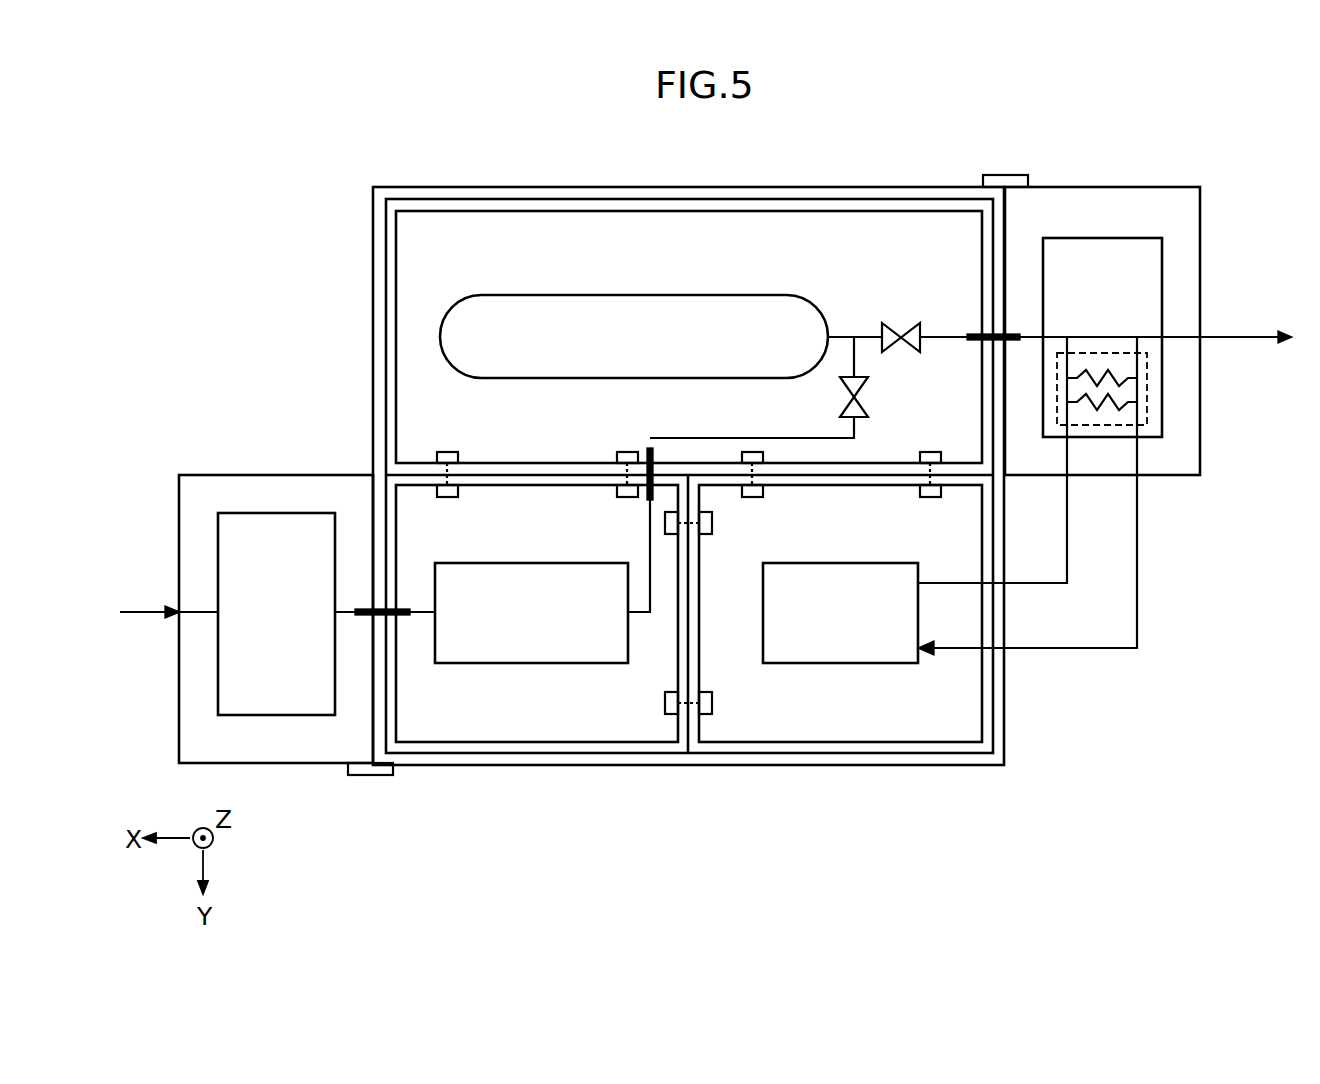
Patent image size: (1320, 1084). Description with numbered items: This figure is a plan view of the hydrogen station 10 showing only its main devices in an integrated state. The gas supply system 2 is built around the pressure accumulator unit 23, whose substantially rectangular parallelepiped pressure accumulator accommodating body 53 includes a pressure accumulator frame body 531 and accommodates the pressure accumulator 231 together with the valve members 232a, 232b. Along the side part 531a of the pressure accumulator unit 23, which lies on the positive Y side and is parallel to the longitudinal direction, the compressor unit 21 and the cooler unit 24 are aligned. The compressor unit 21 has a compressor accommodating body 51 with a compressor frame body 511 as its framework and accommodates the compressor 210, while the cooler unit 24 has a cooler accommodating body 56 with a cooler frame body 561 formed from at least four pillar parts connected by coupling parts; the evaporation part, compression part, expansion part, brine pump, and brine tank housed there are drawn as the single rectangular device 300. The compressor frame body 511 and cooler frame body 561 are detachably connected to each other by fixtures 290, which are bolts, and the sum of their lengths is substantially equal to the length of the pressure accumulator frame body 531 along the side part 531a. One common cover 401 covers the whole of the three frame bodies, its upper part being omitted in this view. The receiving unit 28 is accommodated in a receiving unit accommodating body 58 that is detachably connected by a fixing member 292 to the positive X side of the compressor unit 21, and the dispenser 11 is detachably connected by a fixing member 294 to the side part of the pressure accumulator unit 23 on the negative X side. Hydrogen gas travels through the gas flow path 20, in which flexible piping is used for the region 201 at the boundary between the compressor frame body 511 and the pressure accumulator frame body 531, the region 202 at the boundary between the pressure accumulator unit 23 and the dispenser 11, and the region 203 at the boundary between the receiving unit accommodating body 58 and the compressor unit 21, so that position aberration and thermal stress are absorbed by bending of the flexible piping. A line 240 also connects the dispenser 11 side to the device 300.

The gas supply system 2 is at (554, 130).
The hydrogen station 10 is at (470, 118).
The dispenser 11 is at (1132, 187).
The gas flow path 20 is at (640, 614).
The compressor unit 21 is at (494, 826).
The pressure accumulator unit 23 is at (262, 233).
The cooler unit 24 is at (900, 826).
The receiving unit 28 is at (243, 513).
The compressor accommodating body 51 is at (462, 898).
The pressure accumulator accommodating body 53 is at (410, 175).
The cooler accommodating body 56 is at (982, 882).
The receiving unit accommodating body 58 is at (179, 520).
The region 201 is at (650, 448).
The region 202 is at (988, 337).
The region 203 is at (388, 610).
The compressor 210 is at (540, 665).
The pressure accumulator 231 is at (473, 296).
The valve member 232a is at (868, 405).
The valve member 232b is at (893, 325).
The circulation pipe 240 is at (1073, 650).
The fixtures 290 is at (445, 452).
The fixing member 292 is at (378, 778).
The fixing member 294 is at (1005, 175).
The device 300 is at (857, 665).
The common cover 401 is at (807, 187).
The compressor frame body 511 is at (458, 745).
The pressure accumulator frame body 531 is at (387, 293).
The side part 531a is at (903, 478).
The cooler frame body 561 is at (950, 755).